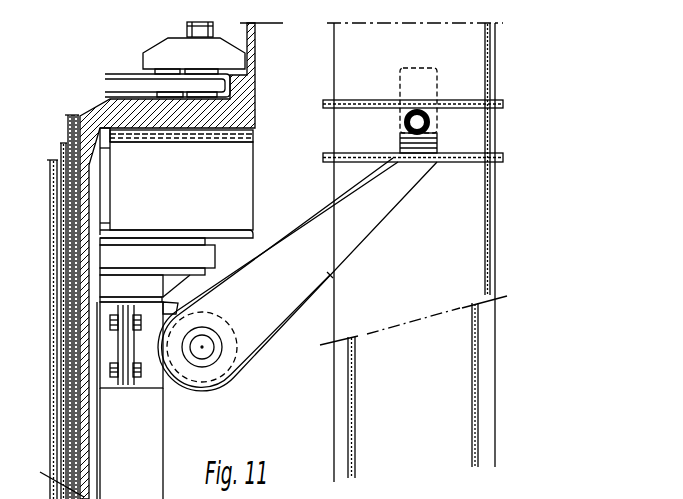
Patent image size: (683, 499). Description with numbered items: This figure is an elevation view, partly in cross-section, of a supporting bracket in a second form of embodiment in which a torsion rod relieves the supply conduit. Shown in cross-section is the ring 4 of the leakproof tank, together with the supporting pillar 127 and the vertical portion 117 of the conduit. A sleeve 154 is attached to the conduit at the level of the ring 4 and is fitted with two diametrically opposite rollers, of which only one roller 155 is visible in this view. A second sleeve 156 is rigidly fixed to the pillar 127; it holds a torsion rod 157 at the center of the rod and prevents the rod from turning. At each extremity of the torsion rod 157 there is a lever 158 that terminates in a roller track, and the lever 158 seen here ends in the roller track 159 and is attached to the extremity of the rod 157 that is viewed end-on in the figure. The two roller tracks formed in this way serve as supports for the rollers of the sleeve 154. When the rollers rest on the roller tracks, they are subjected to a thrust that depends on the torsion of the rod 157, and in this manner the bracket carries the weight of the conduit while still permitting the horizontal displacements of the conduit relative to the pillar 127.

The ring 4 is at (257, 131).
The vertical portion of the supply conduit 117 is at (493, 202).
The supporting pillar 127 is at (148, 448).
The sleeve 154 is at (488, 148).
The roller 155 is at (432, 123).
The sleeve 156 is at (172, 387).
The torsion rod 157 is at (217, 333).
The lever 158 is at (396, 197).
The roller track 159 is at (421, 141).